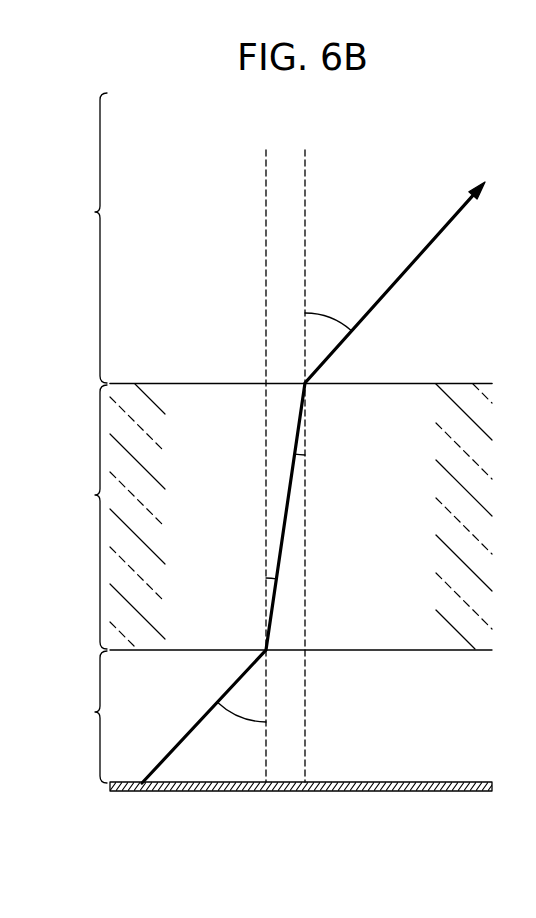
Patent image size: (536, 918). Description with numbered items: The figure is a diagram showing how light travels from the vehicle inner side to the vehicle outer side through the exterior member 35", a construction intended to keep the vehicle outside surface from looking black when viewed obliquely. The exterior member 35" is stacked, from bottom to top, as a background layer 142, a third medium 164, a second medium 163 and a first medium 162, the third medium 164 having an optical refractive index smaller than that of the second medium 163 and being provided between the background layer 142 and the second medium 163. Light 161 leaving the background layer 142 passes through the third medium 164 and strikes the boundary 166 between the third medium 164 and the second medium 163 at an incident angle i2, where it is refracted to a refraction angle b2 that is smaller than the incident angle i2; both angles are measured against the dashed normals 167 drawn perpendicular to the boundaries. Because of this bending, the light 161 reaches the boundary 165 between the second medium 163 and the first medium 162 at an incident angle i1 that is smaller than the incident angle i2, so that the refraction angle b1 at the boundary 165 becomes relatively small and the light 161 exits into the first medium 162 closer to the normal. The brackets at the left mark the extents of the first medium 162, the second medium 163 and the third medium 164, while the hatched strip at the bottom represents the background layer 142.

The exterior member 35 is at (128, 816).
The background layer 142 is at (292, 791).
The light 161 is at (190, 731).
The first medium 162 is at (82, 238).
The second medium 163 is at (274, 516).
The third medium 164 is at (82, 717).
The boundary 165 is at (127, 383).
The boundary 166 is at (185, 650).
The surface normals 167 is at (265, 150).
The refraction angle b1 is at (325, 313).
The refraction angle b2 is at (270, 578).
The incident angle i1 is at (300, 456).
The incident angle i2 is at (238, 716).